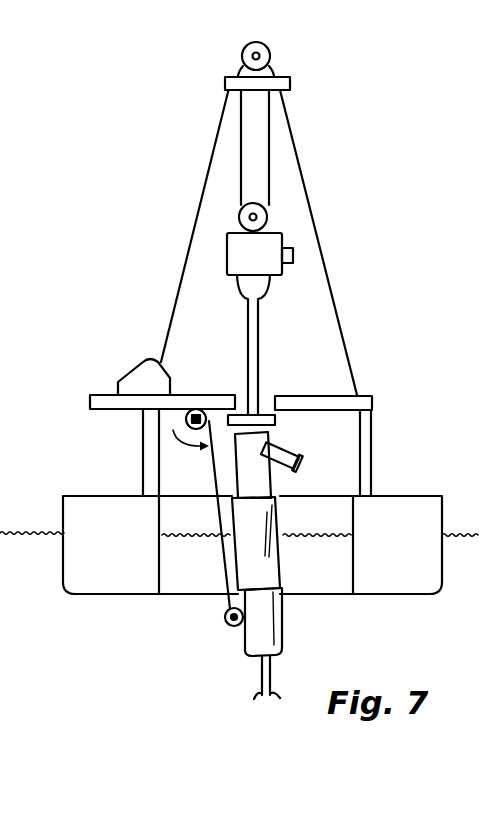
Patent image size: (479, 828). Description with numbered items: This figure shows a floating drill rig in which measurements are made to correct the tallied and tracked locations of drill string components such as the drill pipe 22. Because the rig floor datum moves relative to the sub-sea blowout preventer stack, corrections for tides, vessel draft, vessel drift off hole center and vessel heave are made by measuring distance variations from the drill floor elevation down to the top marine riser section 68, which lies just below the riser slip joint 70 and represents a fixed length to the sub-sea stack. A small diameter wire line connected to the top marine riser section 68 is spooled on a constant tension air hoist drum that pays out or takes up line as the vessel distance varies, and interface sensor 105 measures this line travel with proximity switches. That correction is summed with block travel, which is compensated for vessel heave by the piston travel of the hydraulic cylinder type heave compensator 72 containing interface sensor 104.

The drill pipe 22 is at (260, 680).
The top marine riser section 68 is at (283, 628).
The riser slip joint 70 is at (292, 506).
The hydraulic cylinder type heave compensator 72 is at (233, 257).
The interface sensor 104 is at (294, 254).
The interface sensor 105 is at (157, 418).